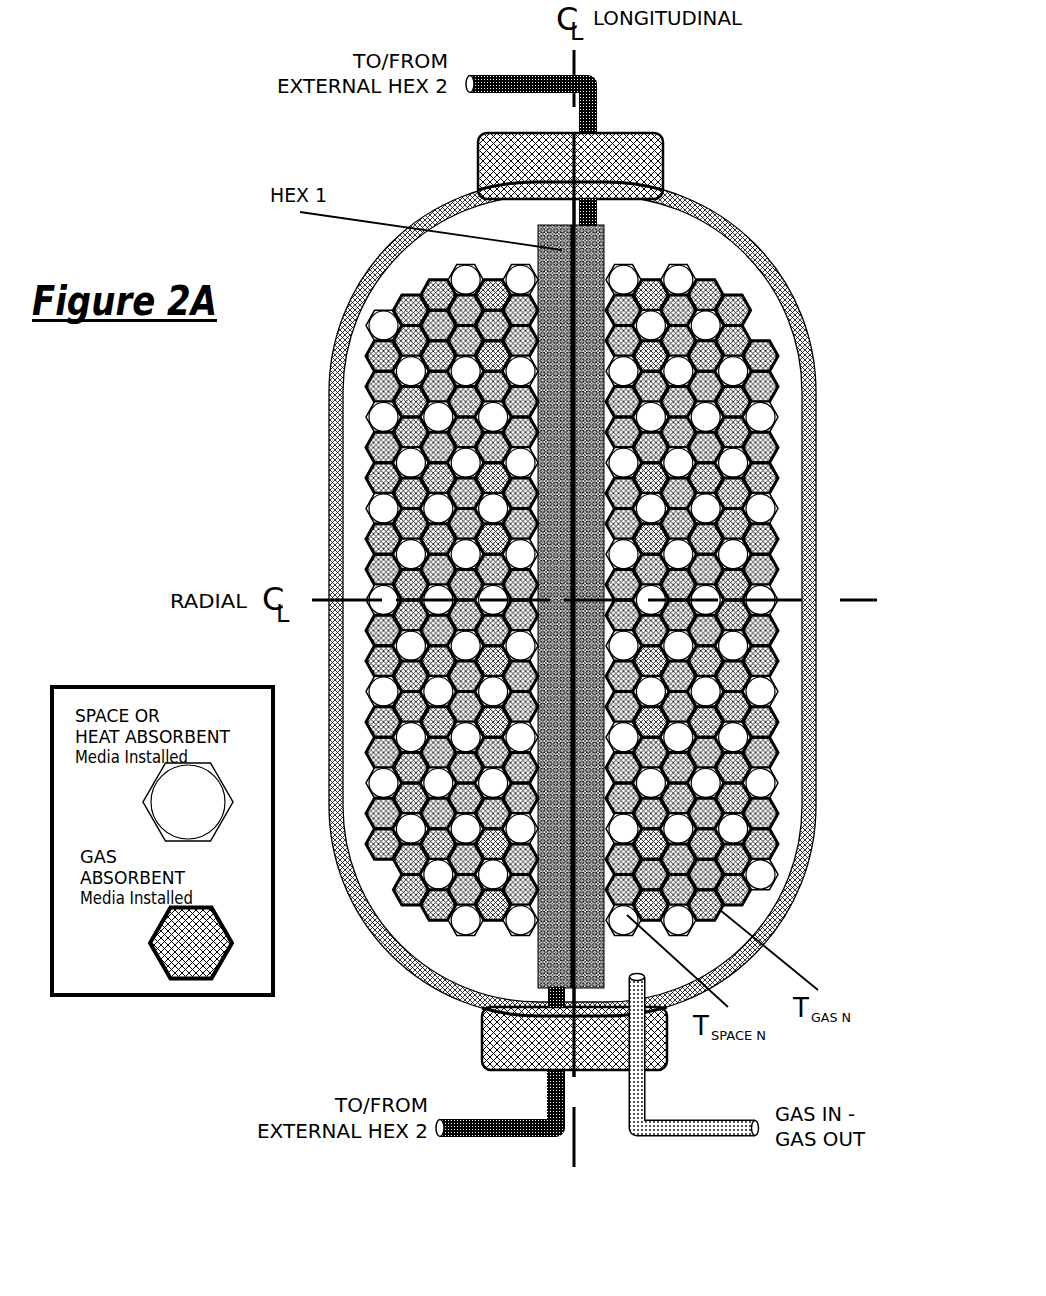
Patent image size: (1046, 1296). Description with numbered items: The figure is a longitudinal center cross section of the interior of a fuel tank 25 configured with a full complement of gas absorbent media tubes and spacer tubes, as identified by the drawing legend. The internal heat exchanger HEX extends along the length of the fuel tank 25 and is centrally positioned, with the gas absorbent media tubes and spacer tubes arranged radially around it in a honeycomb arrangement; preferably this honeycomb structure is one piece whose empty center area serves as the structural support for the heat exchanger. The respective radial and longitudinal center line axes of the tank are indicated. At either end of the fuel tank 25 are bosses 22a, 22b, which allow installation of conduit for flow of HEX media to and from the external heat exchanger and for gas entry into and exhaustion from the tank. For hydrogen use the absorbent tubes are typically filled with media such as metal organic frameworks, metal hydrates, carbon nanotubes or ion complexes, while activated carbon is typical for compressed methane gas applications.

The fuel tank 25 is at (327, 424).
The boss 22a is at (478, 175).
The boss 22b is at (482, 1040).